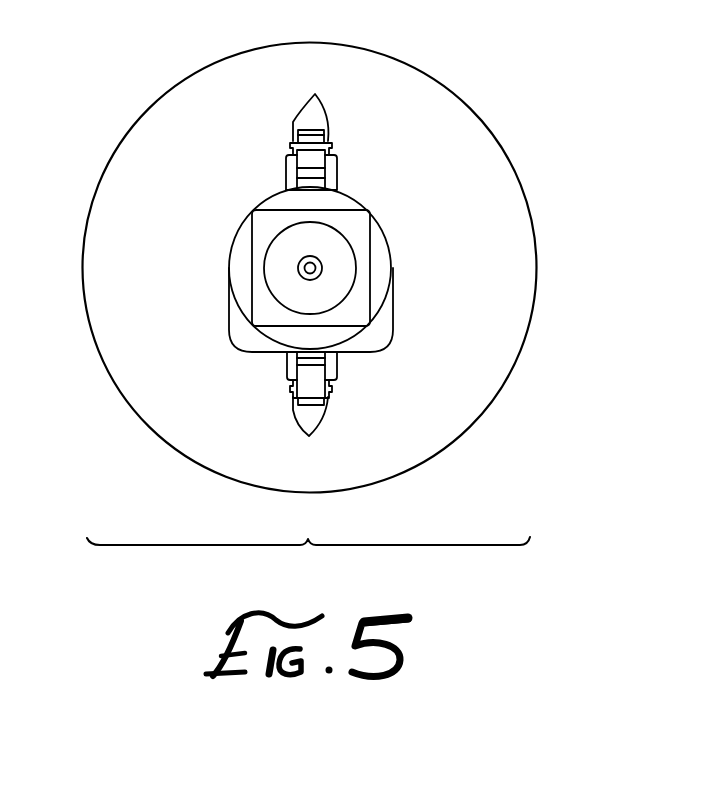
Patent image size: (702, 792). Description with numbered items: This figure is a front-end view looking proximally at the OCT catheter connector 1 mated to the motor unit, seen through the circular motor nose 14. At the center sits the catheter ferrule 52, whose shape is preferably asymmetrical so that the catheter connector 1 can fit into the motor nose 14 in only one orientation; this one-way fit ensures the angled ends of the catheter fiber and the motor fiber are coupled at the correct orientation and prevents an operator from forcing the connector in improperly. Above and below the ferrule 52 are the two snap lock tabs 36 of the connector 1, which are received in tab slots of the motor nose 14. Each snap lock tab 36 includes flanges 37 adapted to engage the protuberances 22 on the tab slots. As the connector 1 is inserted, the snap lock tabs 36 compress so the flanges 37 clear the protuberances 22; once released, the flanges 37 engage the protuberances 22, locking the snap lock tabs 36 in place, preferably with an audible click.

The OCT catheter connector 1 is at (308, 559).
The motor nose 14 is at (144, 160).
The protuberances 22 is at (308, 269).
The snap lock tabs 36 is at (308, 166).
The flanges 37 is at (292, 148).
The catheter ferrule 52 is at (378, 222).